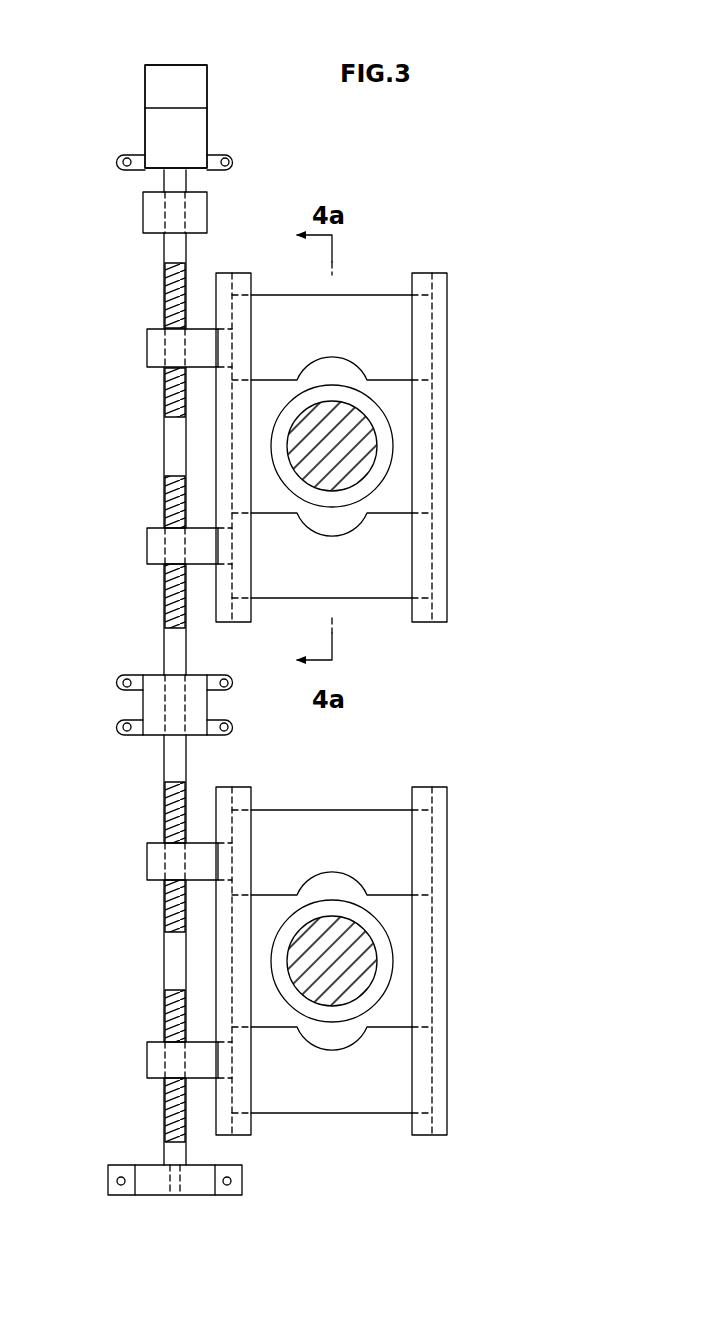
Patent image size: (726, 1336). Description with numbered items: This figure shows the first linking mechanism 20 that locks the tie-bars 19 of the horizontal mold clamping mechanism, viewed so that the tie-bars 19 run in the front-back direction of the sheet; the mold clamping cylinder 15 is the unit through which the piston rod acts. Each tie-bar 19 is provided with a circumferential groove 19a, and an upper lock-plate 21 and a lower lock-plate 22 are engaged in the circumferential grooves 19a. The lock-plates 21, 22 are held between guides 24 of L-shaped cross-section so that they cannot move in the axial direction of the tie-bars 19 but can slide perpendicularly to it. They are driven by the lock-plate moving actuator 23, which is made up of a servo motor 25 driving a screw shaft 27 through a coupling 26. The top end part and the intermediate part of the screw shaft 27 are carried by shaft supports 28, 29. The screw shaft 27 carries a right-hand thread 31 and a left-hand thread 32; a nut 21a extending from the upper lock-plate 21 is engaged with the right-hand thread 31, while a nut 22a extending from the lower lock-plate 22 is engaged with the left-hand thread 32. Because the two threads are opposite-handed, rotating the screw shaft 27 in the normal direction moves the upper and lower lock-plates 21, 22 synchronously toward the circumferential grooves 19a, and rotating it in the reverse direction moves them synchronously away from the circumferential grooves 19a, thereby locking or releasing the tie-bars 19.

The mold clamping cylinder 15 is at (432, 712).
The tie-bar 19 is at (368, 448).
The circumferential groove 19a is at (367, 421).
The first linking mechanism 20 is at (530, 188).
The upper lock-plate 21 is at (362, 305).
The nut 21a is at (155, 352).
The lower lock-plate 22 is at (382, 575).
The nut 22a is at (155, 548).
The lock-plate moving actuator 23 is at (115, 95).
The guide 24 is at (240, 290).
The servo motor 25 is at (192, 130).
The coupling 26 is at (155, 213).
The screw shaft 27 is at (165, 455).
The shaft support 28 is at (157, 1185).
The shaft support 29 is at (155, 705).
The right-hand thread 31 is at (165, 298).
The left-hand thread 32 is at (172, 615).